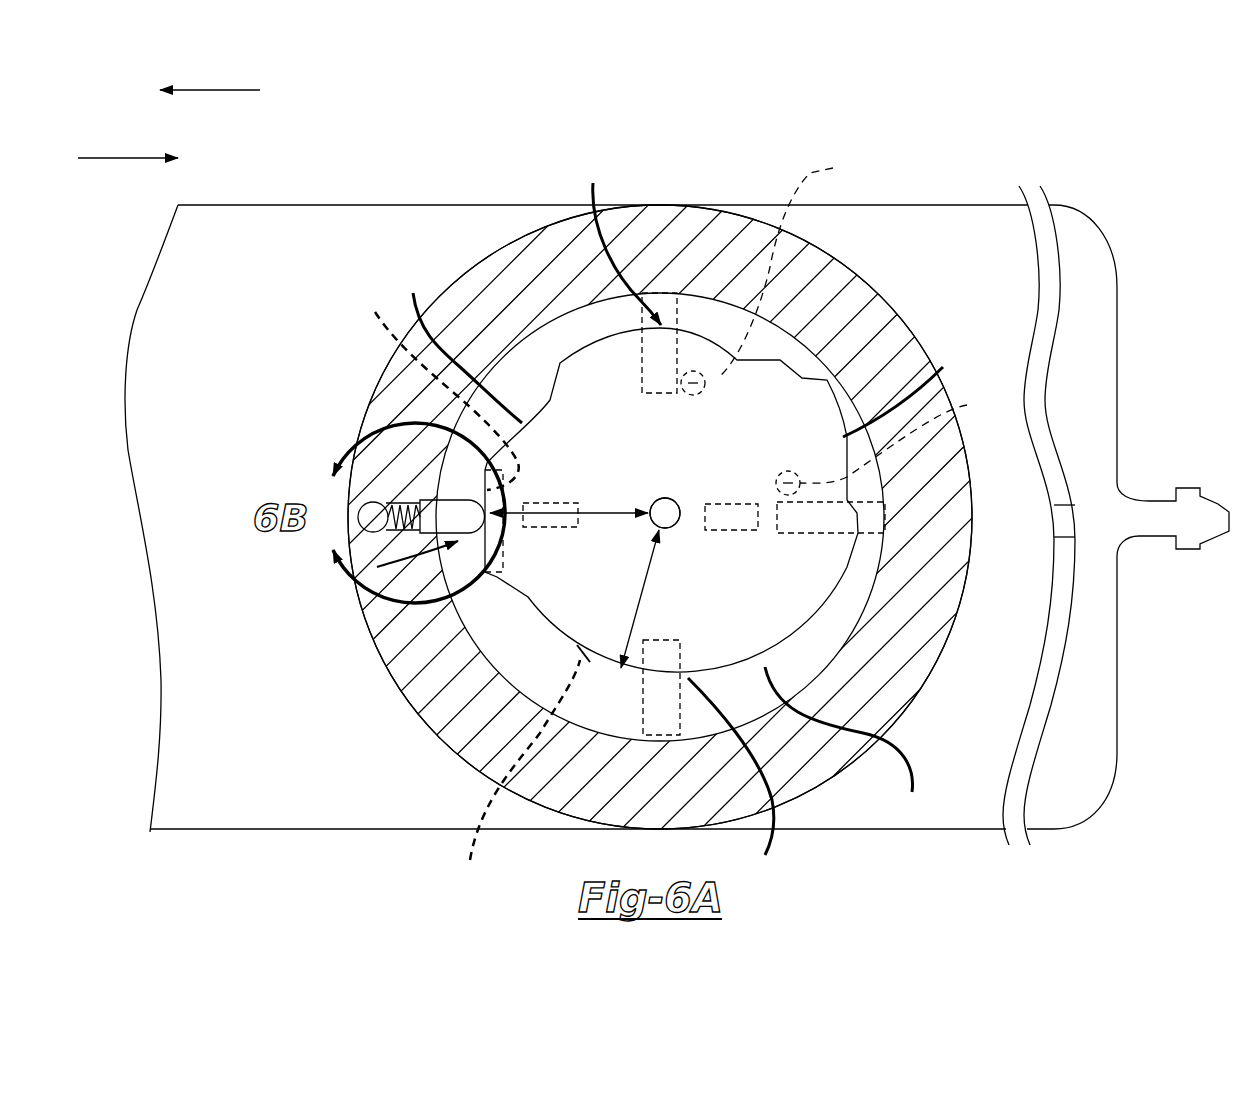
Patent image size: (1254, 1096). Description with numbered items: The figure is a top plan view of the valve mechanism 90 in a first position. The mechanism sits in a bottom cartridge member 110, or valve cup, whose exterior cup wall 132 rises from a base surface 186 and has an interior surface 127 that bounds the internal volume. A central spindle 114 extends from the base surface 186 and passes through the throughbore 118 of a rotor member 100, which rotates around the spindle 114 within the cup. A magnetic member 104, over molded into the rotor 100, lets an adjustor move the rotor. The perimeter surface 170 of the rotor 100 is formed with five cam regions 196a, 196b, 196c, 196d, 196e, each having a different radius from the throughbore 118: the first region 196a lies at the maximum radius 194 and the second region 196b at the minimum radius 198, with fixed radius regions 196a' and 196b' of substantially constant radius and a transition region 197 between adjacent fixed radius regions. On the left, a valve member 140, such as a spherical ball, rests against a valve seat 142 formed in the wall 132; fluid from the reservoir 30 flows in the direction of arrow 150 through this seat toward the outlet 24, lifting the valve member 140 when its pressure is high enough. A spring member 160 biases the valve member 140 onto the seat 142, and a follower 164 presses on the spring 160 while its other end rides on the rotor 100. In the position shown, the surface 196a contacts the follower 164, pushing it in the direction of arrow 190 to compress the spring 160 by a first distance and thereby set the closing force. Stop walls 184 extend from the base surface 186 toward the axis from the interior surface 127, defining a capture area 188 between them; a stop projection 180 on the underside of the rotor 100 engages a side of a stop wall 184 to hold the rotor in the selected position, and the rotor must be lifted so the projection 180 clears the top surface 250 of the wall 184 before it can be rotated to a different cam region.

The outlet 24 is at (1160, 503).
The reservoir 30 is at (198, 546).
The valve mechanism 90 is at (886, 178).
The rotor member 100 is at (551, 354).
The magnetic member 104 is at (740, 532).
The bottom cartridge member 110 is at (377, 365).
The central spindle 114 is at (663, 498).
The throughbore 118 is at (679, 508).
The interior surface 127 is at (748, 727).
The exterior cup wall 132 is at (368, 405).
The valve member 140 is at (352, 505).
The valve seat 142 is at (343, 522).
The arrow 150 is at (115, 158).
The spring member 160 is at (402, 503).
The follower 164 is at (429, 521).
The perimeter surface 170 is at (842, 392).
The stop projection 180 is at (845, 325).
The stop wall 184 is at (704, 325).
The base surface 186 is at (713, 330).
The capture area 188 is at (815, 372).
The arrow 190 is at (215, 90).
The maximum radius 194 is at (607, 517).
The first cam region 196a is at (458, 345).
The fixed radius region 196a' is at (424, 389).
The second cam region 196b is at (731, 773).
The fixed radius region 196b' is at (514, 767).
The third cam region 196c is at (848, 741).
The fourth cam region 196d is at (943, 367).
The fifth cam region 196e is at (627, 245).
The transition region 197 is at (553, 380).
The minimum radius 198 is at (637, 606).
The top surface 250 is at (668, 293).